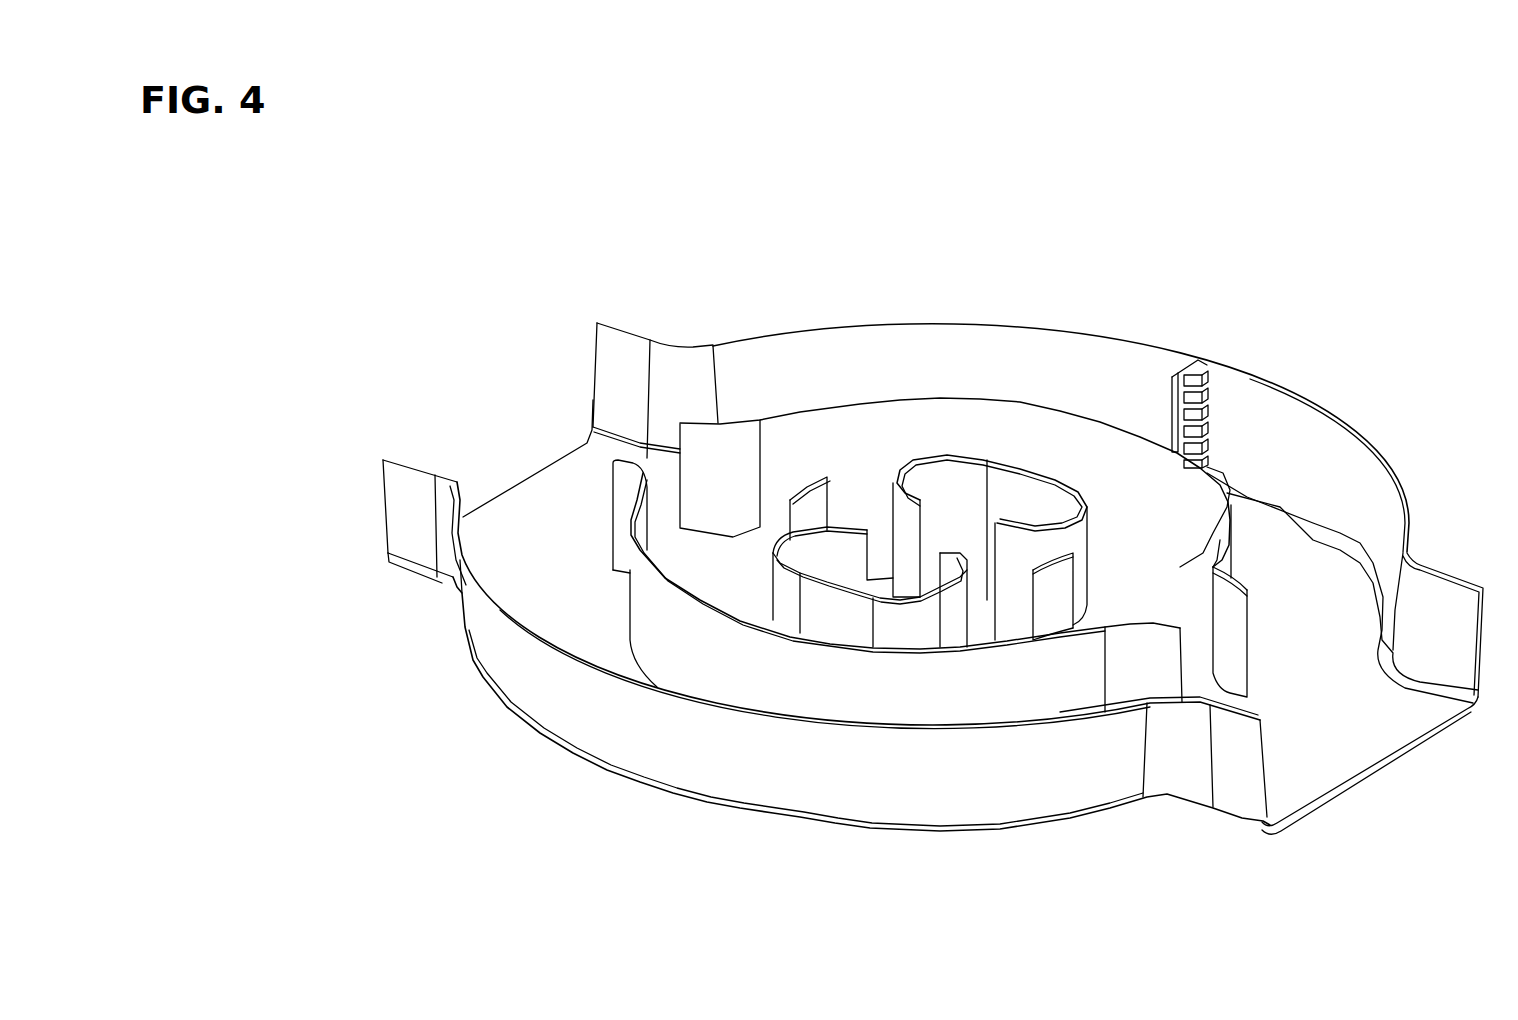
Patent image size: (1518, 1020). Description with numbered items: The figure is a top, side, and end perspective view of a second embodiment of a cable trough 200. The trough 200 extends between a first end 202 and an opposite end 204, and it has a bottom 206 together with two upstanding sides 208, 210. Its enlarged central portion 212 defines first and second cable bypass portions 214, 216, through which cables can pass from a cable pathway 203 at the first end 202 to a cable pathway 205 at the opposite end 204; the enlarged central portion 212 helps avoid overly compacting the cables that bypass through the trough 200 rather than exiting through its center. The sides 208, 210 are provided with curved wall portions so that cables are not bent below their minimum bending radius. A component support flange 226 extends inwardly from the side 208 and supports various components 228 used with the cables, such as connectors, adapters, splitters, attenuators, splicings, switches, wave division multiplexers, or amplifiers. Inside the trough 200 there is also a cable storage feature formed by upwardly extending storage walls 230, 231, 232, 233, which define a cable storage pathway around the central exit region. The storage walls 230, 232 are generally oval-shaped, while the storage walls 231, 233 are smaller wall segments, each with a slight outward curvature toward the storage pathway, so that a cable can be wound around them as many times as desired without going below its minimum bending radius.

The trough 200 is at (898, 284).
The first end 202 is at (527, 477).
The cable pathway 203 is at (582, 537).
The opposite end 204 is at (1363, 773).
The cable pathway 205 is at (1352, 732).
The bottom 206 is at (1335, 648).
The side 208 is at (1052, 376).
The side 210 is at (952, 787).
The enlarged central portion 212 is at (1125, 340).
The first cable bypass pathway 214 is at (1305, 571).
The second cable bypass pathway 216 is at (605, 627).
The component support flange 226 is at (1192, 363).
The components 228 is at (1208, 402).
The storage wall 230 is at (920, 457).
The storage wall 231 is at (1073, 593).
The storage wall 232 is at (833, 583).
The storage wall 233 is at (803, 487).